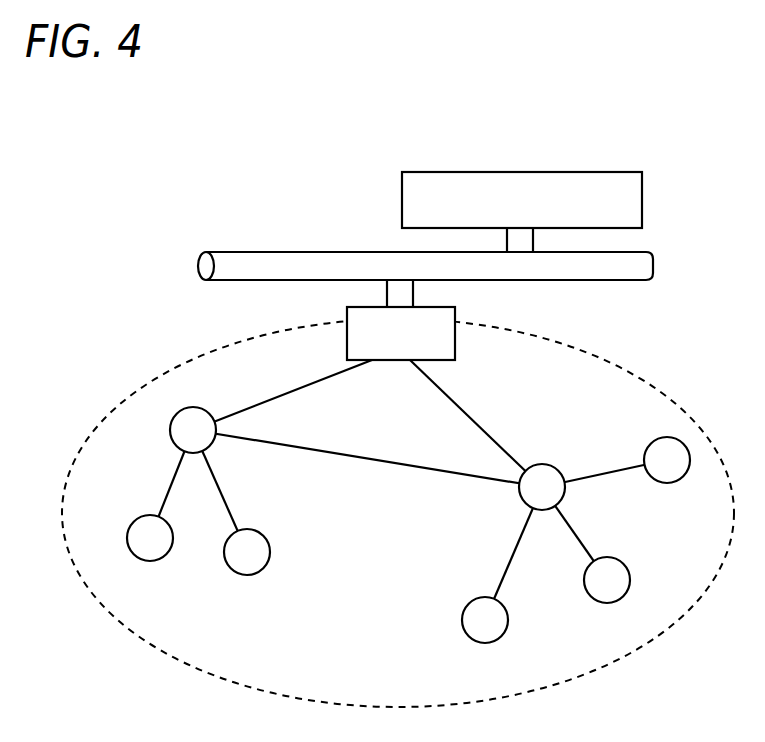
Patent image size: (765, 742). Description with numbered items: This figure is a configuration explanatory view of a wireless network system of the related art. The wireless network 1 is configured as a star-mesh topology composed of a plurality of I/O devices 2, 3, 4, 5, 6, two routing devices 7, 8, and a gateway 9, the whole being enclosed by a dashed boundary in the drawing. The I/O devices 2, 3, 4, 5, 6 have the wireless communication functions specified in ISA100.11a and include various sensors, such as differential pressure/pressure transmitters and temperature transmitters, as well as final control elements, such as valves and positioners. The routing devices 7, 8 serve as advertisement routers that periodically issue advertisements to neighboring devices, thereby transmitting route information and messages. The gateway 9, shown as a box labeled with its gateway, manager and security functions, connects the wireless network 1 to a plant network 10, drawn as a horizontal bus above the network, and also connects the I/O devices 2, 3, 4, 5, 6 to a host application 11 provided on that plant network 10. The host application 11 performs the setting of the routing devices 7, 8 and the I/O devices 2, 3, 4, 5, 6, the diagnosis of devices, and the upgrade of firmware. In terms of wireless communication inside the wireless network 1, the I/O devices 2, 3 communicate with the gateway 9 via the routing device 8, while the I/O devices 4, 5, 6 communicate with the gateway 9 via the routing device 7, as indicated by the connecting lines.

The wireless network 1 is at (571, 331).
The I/O device 2 is at (155, 561).
The I/O device 3 is at (245, 575).
The I/O device 4 is at (462, 620).
The I/O device 5 is at (585, 583).
The I/O device 6 is at (667, 483).
The routing device 7 is at (548, 465).
The routing device 8 is at (172, 440).
The gateway 9 is at (455, 340).
The plant network 10 is at (293, 251).
The host application 11 is at (443, 172).